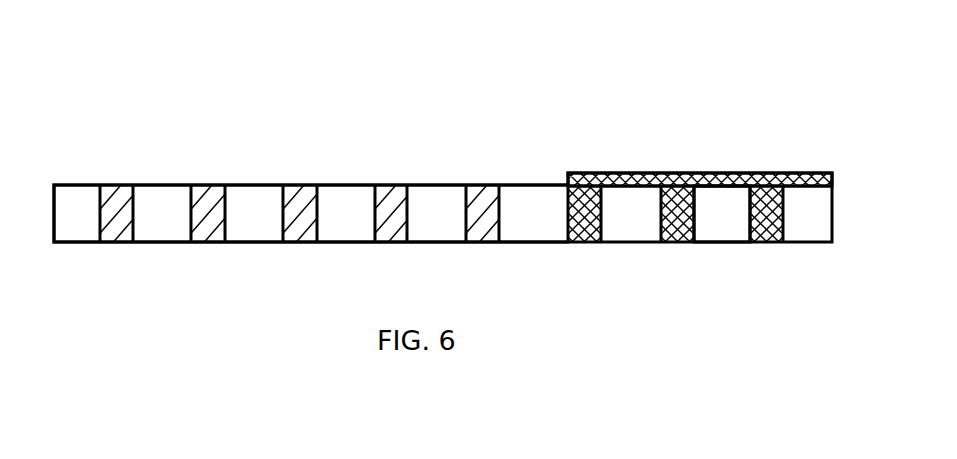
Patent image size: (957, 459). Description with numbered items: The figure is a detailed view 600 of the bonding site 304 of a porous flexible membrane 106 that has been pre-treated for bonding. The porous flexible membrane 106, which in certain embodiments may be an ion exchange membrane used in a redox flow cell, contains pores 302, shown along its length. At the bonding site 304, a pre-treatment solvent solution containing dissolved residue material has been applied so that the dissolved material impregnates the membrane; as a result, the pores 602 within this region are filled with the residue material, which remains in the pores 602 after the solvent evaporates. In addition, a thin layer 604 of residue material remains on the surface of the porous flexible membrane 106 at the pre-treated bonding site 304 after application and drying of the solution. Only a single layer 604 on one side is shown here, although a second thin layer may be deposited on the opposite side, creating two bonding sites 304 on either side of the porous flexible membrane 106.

The detailed view 600 is at (86, 62).
The porous flexible membrane 106 is at (80, 185).
The pores 302 is at (485, 207).
The pores filled with dissolved residue material 602 is at (773, 197).
The thin layer 604 is at (820, 173).
The bonding site 304 is at (722, 187).